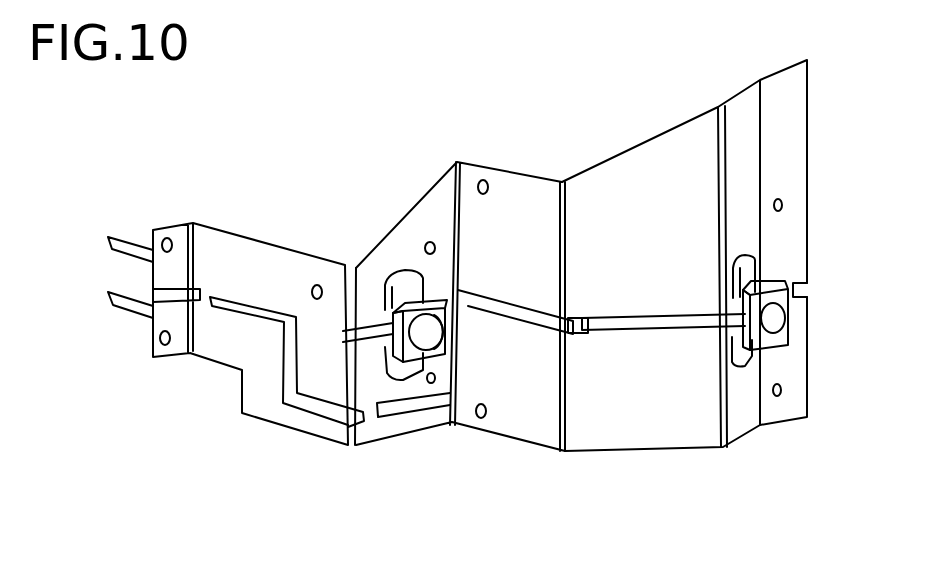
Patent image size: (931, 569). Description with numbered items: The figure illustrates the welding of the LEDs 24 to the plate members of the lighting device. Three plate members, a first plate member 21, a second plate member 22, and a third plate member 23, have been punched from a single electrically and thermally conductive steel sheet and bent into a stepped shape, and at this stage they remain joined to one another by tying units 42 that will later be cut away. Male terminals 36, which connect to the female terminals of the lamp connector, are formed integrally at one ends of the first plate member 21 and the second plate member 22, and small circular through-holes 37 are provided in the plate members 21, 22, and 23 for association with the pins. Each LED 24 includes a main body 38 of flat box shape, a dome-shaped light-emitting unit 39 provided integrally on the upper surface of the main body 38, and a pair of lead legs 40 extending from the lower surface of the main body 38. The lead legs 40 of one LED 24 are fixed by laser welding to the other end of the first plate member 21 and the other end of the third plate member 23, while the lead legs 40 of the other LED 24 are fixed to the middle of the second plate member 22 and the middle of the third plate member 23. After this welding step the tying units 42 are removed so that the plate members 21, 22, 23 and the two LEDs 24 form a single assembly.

The first plate member 21 is at (598, 438).
The second plate member 22 is at (218, 250).
The third plate member 23 is at (630, 160).
The LED 24 is at (442, 357).
The male terminal 36 is at (124, 238).
The through-hole 37 is at (168, 240).
The main body 38 is at (435, 300).
The light-emitting unit 39 is at (450, 340).
The lead leg 40 is at (402, 287).
The tying unit 42 is at (222, 298).